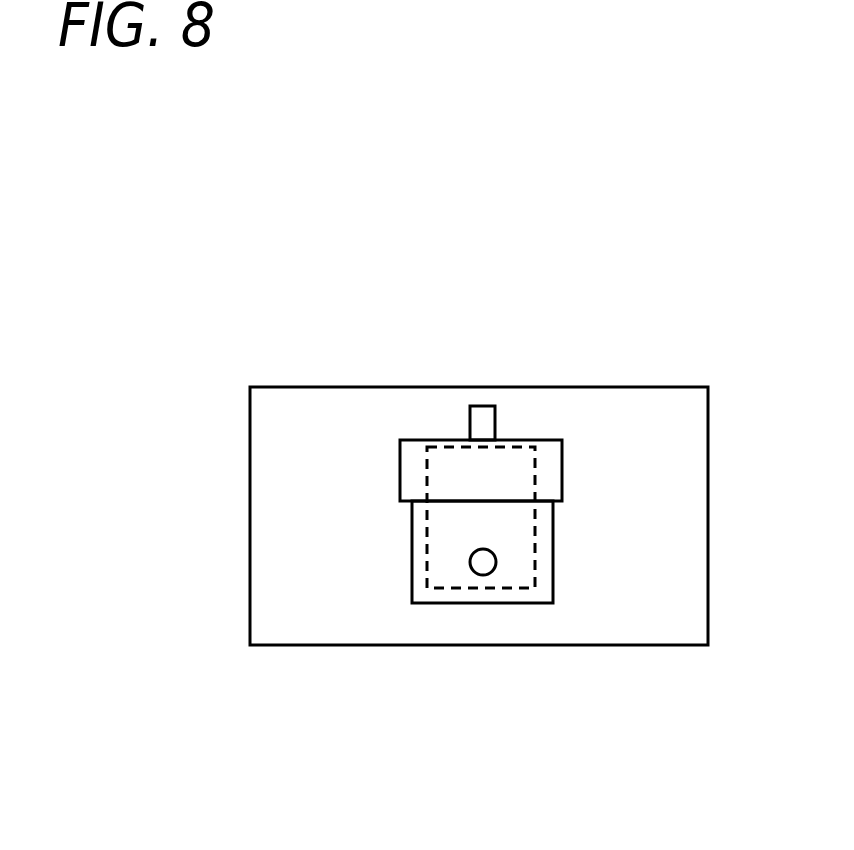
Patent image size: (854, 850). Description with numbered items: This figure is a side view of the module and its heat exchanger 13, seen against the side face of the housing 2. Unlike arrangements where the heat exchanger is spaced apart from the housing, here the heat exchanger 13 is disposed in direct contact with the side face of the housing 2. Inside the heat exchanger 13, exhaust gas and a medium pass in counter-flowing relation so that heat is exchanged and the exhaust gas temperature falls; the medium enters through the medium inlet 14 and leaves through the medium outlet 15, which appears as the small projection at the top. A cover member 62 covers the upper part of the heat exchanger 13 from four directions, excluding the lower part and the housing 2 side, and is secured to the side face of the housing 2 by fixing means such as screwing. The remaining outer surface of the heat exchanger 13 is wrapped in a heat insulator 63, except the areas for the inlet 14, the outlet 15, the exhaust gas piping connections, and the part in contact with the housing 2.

The housing 2 is at (299, 447).
The heat exchanger 13 is at (438, 582).
The medium inlet 14 is at (483, 567).
The medium outlet 15 is at (488, 421).
The cover member 62 is at (547, 469).
The heat insulator 63 is at (413, 537).